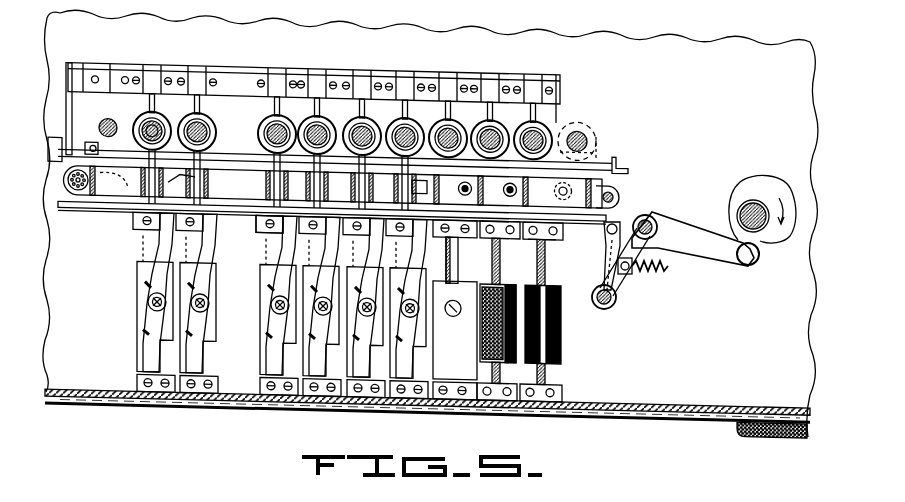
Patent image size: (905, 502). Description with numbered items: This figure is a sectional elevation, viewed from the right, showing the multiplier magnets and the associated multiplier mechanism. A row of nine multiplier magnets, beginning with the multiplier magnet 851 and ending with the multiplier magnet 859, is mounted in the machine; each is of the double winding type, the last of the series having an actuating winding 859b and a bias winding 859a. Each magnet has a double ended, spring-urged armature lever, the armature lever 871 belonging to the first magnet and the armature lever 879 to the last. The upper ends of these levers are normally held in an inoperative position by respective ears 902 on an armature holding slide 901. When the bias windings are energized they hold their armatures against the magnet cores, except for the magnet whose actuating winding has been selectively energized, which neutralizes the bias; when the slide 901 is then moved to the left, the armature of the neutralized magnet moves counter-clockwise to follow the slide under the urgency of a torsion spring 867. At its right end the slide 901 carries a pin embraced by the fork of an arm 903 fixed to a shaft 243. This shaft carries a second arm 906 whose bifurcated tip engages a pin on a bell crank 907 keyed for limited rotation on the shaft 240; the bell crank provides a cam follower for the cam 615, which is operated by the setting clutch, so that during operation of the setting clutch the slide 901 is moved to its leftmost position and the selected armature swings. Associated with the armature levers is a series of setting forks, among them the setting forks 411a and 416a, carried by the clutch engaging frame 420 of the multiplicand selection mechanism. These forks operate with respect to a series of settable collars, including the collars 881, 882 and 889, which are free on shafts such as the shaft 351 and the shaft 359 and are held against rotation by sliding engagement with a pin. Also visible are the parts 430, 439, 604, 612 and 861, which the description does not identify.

The terminal strip 430 is at (247, 88).
The settable collar 881 is at (143, 124).
The shaft 351 is at (155, 121).
The settable collar 882 is at (198, 118).
The setting fork 411a is at (175, 180).
The clutch engaging frame 420 is at (240, 193).
The armature holding slide 901 is at (138, 201).
The ear 902 is at (262, 222).
The torsion spring 867 is at (140, 273).
The multiplier magnet 851 is at (140, 304).
The armature lever 871 is at (145, 340).
The setting fork 416a is at (420, 178).
The settable collar 889 is at (530, 127).
The shaft 359 is at (543, 127).
The guide 439 is at (605, 139).
The shaft 240 is at (645, 214).
The cam shaft 612 is at (738, 193).
The cam 615 is at (781, 191).
The bell crank 907 is at (693, 234).
The roller 604 is at (768, 262).
The arm 903 is at (607, 257).
The actuating winding 859b is at (604, 287).
The bias winding 859a is at (560, 314).
The multiplier magnet 859 is at (560, 338).
The armature lever 879 is at (546, 373).
The second arm 906 is at (632, 289).
The shaft 243 is at (613, 306).
The base rail 861 is at (450, 385).